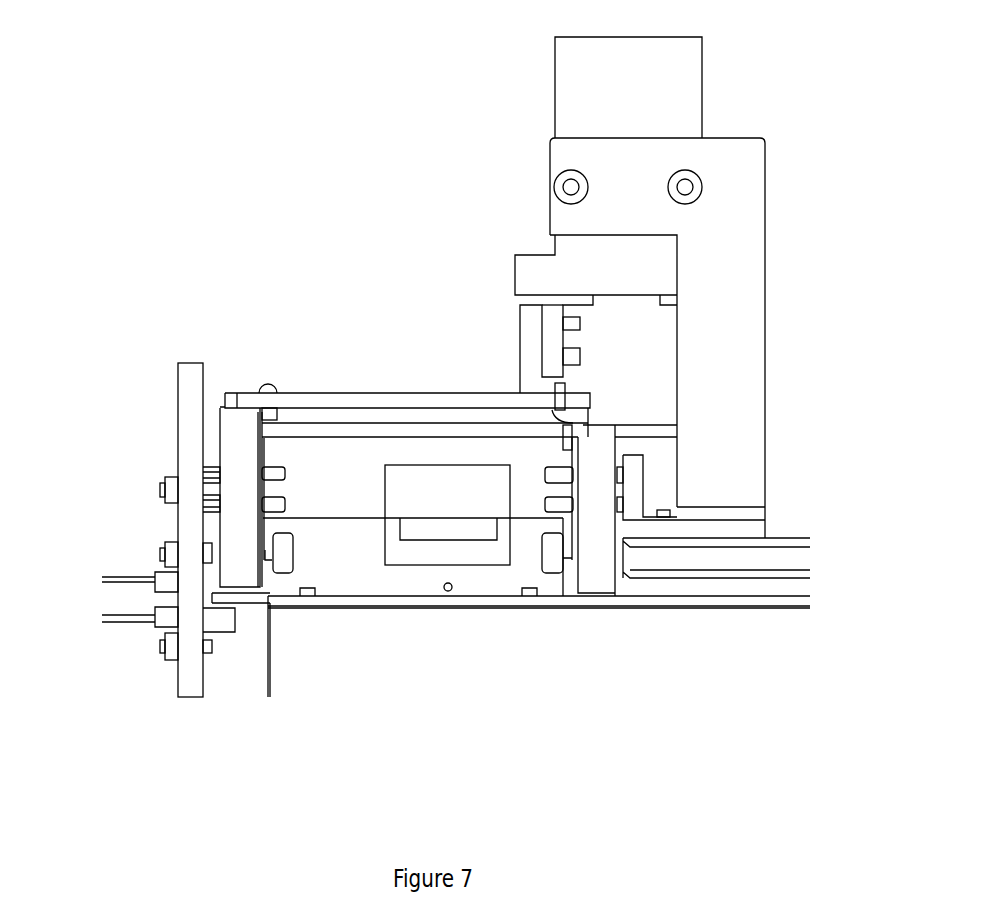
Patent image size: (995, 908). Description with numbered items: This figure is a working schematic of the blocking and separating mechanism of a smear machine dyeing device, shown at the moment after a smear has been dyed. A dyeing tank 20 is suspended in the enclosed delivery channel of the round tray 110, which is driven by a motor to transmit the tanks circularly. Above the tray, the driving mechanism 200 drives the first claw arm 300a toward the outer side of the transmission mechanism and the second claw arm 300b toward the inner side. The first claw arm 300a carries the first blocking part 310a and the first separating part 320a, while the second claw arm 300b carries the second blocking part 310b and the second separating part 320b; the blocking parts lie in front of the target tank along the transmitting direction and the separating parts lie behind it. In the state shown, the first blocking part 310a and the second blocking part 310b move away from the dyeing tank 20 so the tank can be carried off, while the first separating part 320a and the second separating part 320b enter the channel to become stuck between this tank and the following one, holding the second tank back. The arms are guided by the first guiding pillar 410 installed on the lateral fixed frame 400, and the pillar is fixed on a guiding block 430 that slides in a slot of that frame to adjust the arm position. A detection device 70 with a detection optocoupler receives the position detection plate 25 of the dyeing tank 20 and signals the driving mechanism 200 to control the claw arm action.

The driving mechanism 200 is at (582, 82).
The round tray 110 is at (750, 220).
The lateral fixed frame 400 is at (190, 418).
The guiding block 430 is at (210, 468).
The second separating part 320b is at (260, 523).
The first blocking part 310a is at (230, 545).
The detection device 70 is at (167, 607).
The position detection plate 25 is at (247, 600).
The dyeing tank 20 is at (335, 582).
The first claw arm 300a is at (315, 403).
The second claw arm 300b is at (452, 430).
The first guiding pillar 410 is at (283, 497).
The first separating part 320a is at (572, 545).
The second blocking part 310b is at (602, 582).